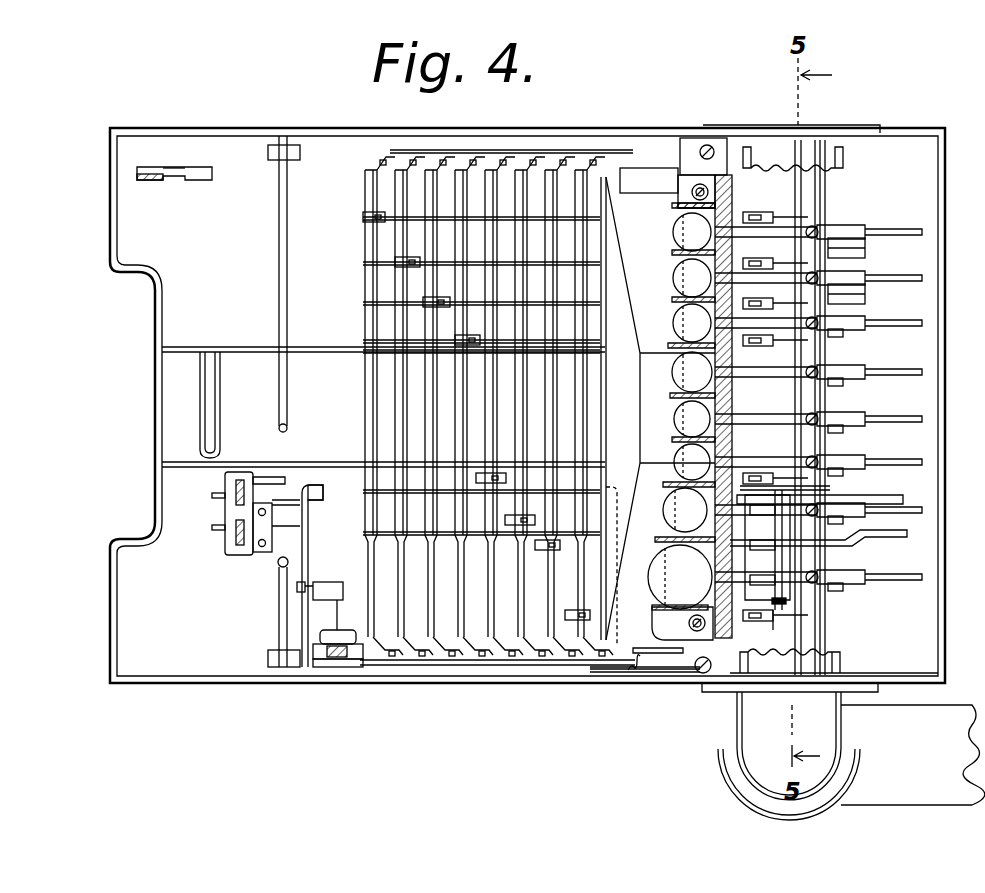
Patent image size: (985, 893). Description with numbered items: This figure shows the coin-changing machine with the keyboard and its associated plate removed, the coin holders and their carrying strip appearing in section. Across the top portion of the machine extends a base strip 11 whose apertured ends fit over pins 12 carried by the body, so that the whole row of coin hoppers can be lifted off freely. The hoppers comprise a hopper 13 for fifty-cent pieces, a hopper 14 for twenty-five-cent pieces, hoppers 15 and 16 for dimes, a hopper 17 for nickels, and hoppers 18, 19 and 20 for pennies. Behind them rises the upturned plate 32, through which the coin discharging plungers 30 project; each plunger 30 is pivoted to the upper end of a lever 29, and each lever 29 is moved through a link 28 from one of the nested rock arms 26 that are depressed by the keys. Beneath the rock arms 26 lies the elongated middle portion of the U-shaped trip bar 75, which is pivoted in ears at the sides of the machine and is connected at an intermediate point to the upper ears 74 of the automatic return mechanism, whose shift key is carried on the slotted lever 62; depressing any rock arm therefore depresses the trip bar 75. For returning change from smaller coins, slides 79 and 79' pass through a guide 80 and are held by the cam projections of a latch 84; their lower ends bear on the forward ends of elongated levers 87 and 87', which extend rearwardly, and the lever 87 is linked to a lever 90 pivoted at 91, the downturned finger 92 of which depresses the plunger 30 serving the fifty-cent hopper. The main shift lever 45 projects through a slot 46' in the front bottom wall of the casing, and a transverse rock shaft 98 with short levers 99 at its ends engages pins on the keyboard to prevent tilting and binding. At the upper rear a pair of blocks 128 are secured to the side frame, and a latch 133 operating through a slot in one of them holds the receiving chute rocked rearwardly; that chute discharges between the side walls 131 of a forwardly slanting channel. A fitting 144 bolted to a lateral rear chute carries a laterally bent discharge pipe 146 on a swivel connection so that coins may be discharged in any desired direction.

The blocks 128 is at (669, 190).
The base strip 11 is at (687, 180).
The pins 12 is at (699, 183).
The link 28 is at (491, 338).
The lever 29 is at (790, 205).
The coin discharging plunger 30 is at (833, 236).
The upturned plate 32 is at (733, 385).
The rock arms 26 is at (447, 371).
The hopper 13 is at (680, 577).
The hopper 14 is at (685, 510).
The hopper 15 is at (692, 462).
The hopper 16 is at (692, 419).
The hopper 17 is at (692, 372).
The hopper 18 is at (692, 323).
The hopper 19 is at (692, 278).
The hopper 20 is at (692, 232).
The lever 90 is at (888, 497).
The pivot 91 is at (792, 609).
The downturned finger 92 is at (773, 630).
The latch 133 is at (675, 673).
The fitting 144 is at (753, 763).
The discharge pipe 146 is at (913, 755).
The main shift lever 45 is at (153, 183).
The slot 46' is at (188, 216).
The short levers 99 is at (300, 151).
The rock shaft 98 is at (269, 318).
The latch 84 is at (297, 489).
The side walls 131 is at (180, 456).
The guide 80 is at (220, 518).
The slide 79' is at (204, 493).
The slide 79 is at (191, 553).
The elongated lever 87 is at (258, 598).
The elongated lever 87' is at (315, 552).
The trip bar 75 is at (338, 485).
The upper ears 74 is at (313, 583).
The lever 62 is at (357, 652).